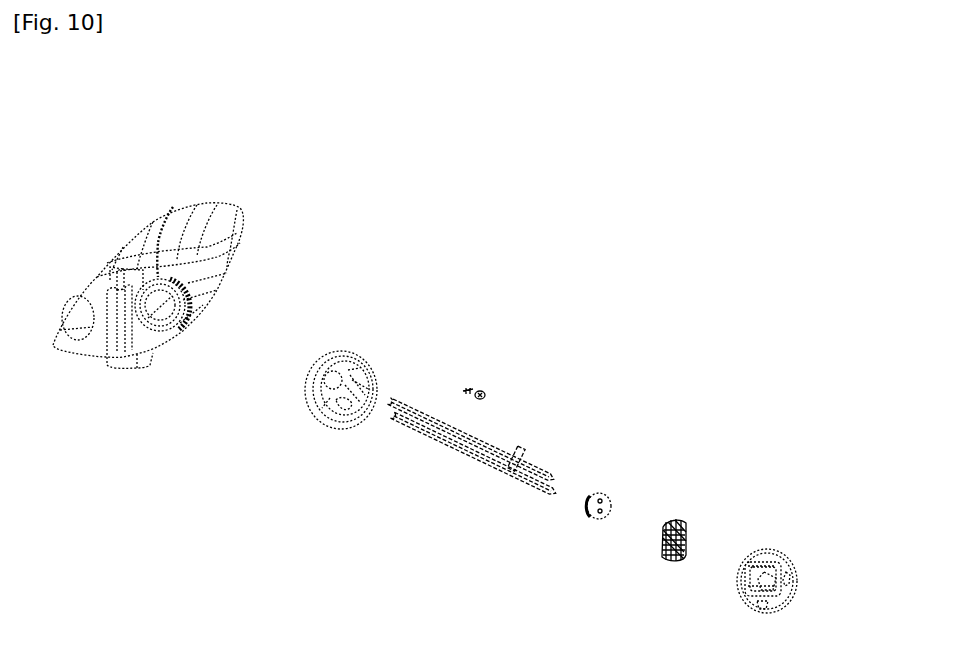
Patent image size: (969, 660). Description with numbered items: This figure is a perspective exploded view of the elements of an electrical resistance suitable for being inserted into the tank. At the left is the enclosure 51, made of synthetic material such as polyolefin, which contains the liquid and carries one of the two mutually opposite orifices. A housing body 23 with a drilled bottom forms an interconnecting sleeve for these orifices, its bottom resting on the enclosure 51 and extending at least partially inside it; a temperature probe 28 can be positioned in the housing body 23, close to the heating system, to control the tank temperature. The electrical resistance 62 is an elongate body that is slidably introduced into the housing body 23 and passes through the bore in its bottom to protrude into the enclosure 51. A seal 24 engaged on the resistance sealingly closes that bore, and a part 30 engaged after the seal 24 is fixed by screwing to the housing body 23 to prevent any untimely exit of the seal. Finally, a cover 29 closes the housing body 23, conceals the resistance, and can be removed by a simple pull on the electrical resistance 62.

The enclosure 51 is at (224, 281).
The housing body 23 is at (375, 362).
The temperature probe 28 is at (483, 394).
The electrical resistance 62 is at (518, 455).
The seal 24 is at (612, 497).
The part 30 is at (680, 521).
The cover 29 is at (800, 580).